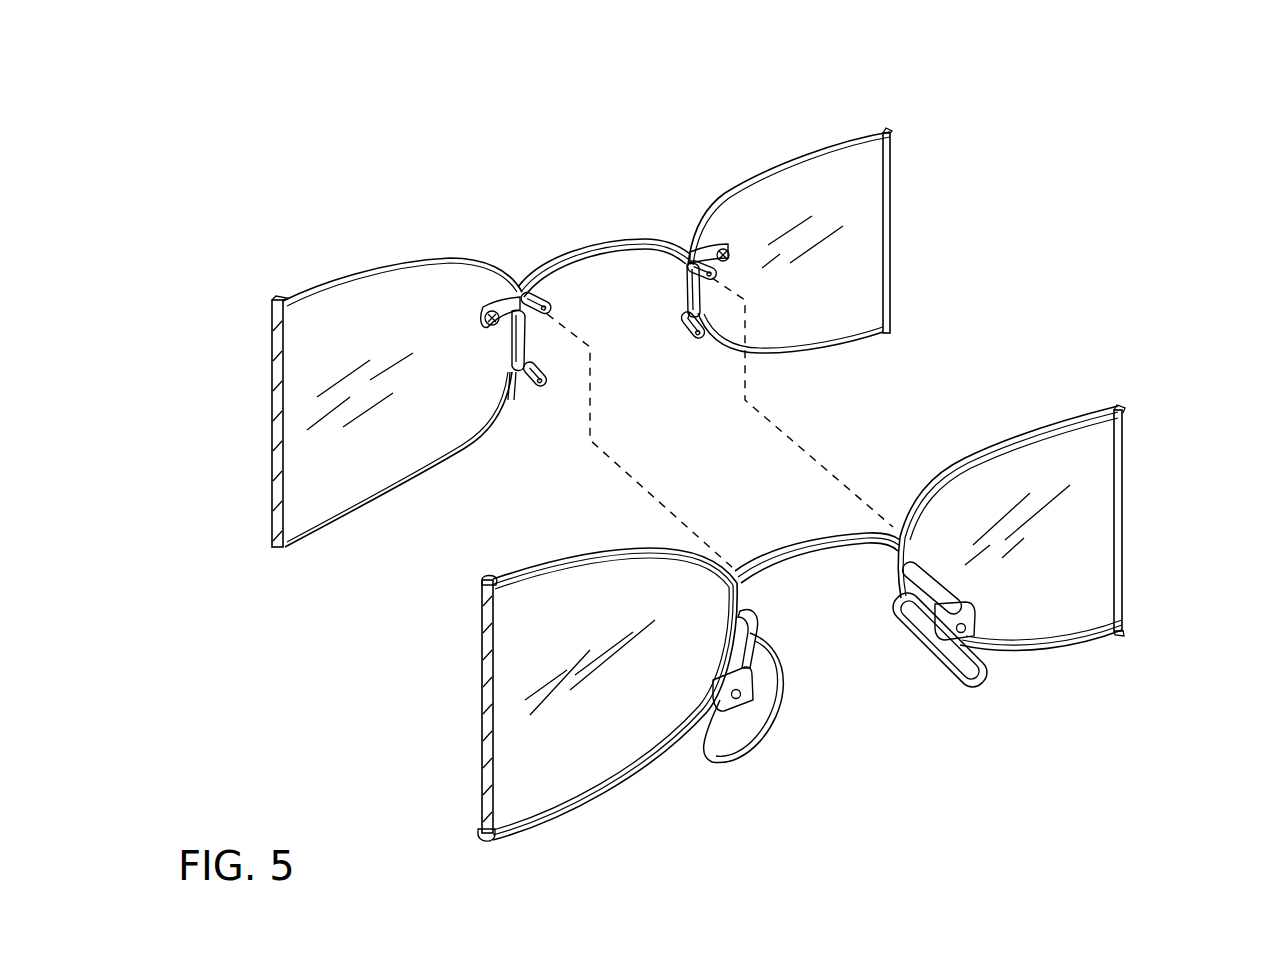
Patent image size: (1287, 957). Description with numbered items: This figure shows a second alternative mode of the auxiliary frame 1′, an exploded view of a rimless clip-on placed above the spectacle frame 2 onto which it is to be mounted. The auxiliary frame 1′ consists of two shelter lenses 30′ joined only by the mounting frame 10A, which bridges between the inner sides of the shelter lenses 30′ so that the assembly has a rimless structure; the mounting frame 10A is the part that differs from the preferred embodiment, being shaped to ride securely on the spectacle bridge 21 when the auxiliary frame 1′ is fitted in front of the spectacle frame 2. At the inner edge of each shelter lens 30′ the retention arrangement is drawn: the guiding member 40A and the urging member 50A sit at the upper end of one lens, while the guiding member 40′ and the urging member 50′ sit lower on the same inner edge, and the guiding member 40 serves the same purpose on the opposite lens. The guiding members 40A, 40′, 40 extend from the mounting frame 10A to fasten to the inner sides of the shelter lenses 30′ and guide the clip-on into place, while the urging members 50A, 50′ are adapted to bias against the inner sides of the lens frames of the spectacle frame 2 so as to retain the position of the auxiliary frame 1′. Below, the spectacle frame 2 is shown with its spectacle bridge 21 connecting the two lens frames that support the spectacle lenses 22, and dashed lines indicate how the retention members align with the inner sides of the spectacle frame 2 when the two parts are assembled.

The mounting frame 10A is at (531, 137).
The auxiliary frame 1′ is at (836, 80).
The shelter lenses 30′ is at (345, 312).
The urging member 50A is at (546, 302).
The guiding member 40A is at (558, 300).
The urging member 50′ is at (533, 381).
The guiding member 40′ is at (543, 383).
The guiding member 40 is at (706, 334).
The spectacle frame 2 is at (974, 757).
The spectacle bridge 21 is at (823, 548).
The spectacle lenses 22 is at (510, 672).